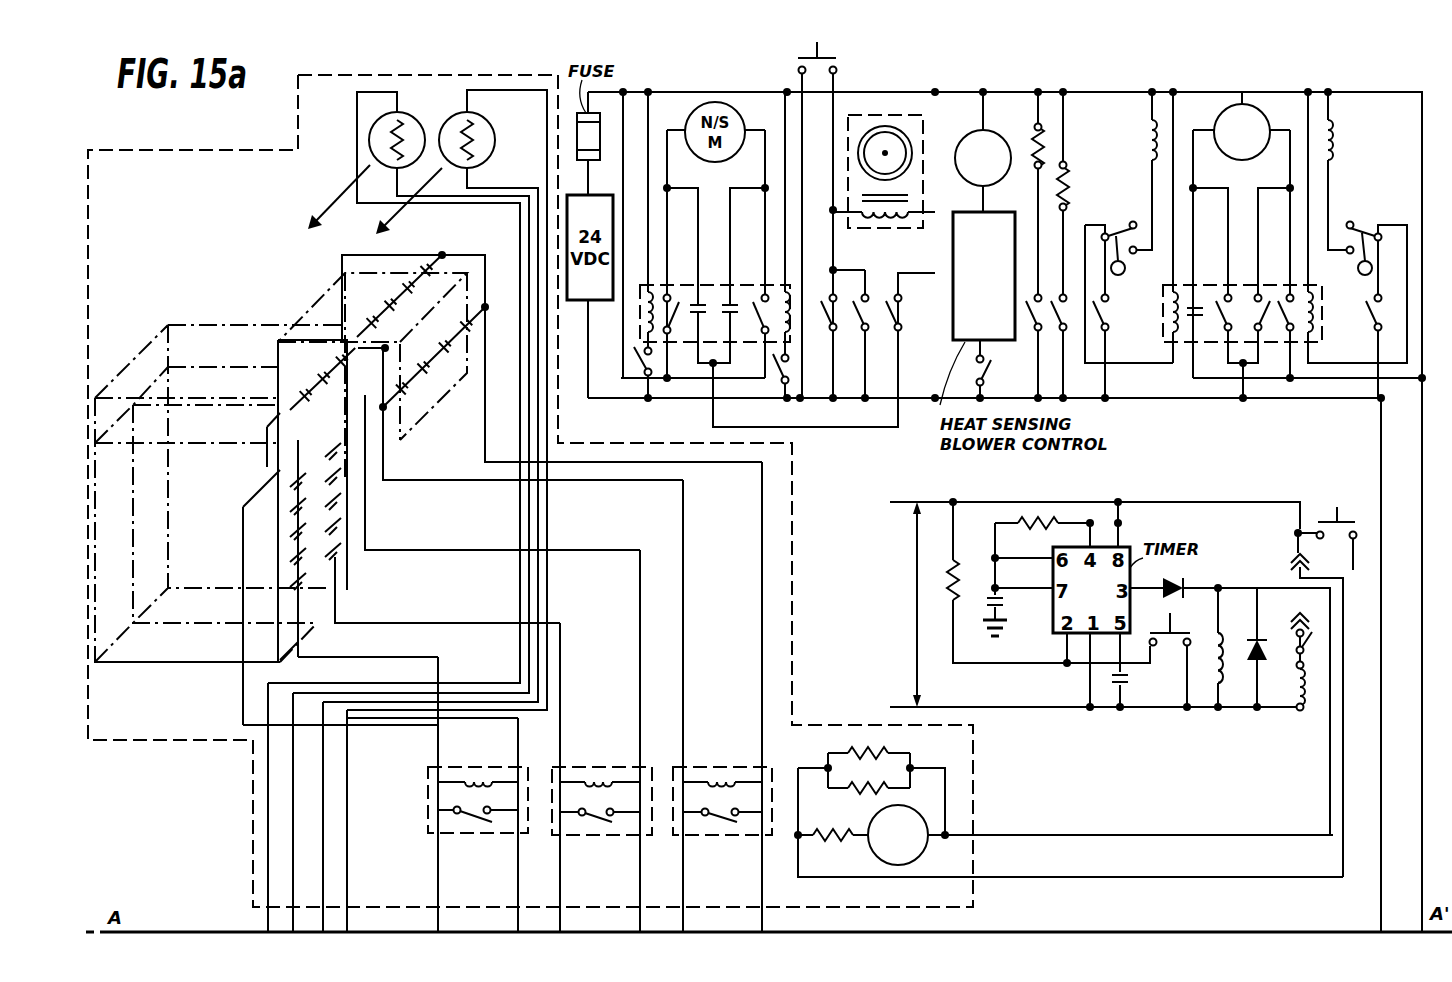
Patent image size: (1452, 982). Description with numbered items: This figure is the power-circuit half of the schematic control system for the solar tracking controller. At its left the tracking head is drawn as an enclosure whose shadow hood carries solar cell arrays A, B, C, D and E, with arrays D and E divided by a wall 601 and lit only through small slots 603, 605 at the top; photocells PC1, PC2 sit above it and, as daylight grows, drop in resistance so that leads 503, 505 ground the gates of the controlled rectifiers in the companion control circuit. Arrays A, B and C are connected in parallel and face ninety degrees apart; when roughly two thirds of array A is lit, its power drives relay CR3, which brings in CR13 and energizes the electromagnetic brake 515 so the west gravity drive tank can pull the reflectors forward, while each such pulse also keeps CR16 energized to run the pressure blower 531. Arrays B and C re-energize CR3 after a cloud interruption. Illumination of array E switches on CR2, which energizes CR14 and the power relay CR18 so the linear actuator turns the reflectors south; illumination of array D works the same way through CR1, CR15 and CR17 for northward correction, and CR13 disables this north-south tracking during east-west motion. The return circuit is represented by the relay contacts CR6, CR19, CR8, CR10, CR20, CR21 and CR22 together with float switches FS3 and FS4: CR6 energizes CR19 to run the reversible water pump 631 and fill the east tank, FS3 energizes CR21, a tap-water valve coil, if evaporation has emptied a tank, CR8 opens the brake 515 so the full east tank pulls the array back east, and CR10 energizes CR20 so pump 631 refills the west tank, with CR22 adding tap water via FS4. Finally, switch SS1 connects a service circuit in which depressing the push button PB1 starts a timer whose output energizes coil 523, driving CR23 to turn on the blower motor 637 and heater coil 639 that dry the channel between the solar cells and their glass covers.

The photocell PC1 is at (417, 119).
The photocell PC2 is at (490, 138).
The solar cell array A is at (313, 372).
The solar cell array B is at (378, 306).
The solar cell array C is at (430, 338).
The solar cell array D is at (284, 540).
The solar cell array E is at (341, 590).
The wall 601 is at (133, 543).
The slot 603 is at (173, 521).
The slot 605 is at (140, 664).
The lead 505 is at (268, 855).
The lead 503 is at (347, 880).
The control relay CR1 is at (418, 769).
The control relay CR2 is at (617, 738).
The control relay CR3 is at (738, 738).
The control relay CR15 is at (640, 385).
The power relay CR17 is at (680, 284).
The power relay CR18 is at (757, 285).
The control relay CR14 is at (775, 390).
The electromagnetic brake 515 is at (885, 115).
The control relay CR8 is at (839, 317).
The control relay CR13 is at (857, 334).
The pressure blower 531 is at (990, 132).
The control relay CR16 is at (1012, 369).
The water valve coil relay CR21 is at (1032, 245).
The water valve relay CR22 is at (1057, 245).
The float switch FS3 is at (1129, 227).
The control relay CR6 is at (1123, 319).
The reversible water pump 631 is at (1244, 104).
The power relay CR19 is at (1221, 288).
The power relay CR20 is at (1255, 288).
The float switch FS4 is at (1362, 183).
The control relay CR10 is at (1357, 319).
The push button PB1 is at (1183, 658).
The coil 523 is at (1214, 688).
The control relay CR23 is at (1289, 648).
The switch SS1 is at (1350, 522).
The heater coil 639 is at (920, 761).
The blower motor 637 is at (923, 822).